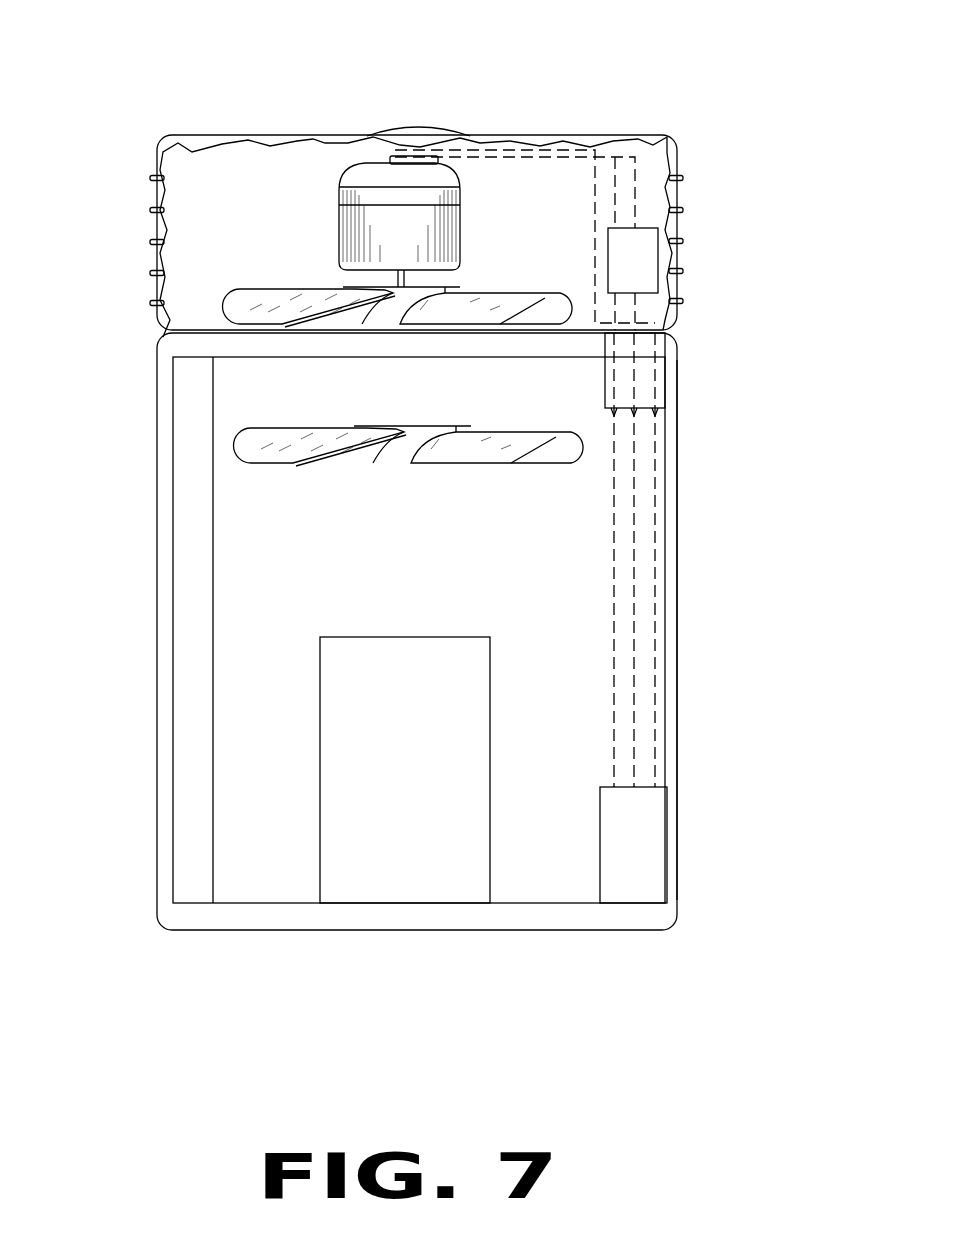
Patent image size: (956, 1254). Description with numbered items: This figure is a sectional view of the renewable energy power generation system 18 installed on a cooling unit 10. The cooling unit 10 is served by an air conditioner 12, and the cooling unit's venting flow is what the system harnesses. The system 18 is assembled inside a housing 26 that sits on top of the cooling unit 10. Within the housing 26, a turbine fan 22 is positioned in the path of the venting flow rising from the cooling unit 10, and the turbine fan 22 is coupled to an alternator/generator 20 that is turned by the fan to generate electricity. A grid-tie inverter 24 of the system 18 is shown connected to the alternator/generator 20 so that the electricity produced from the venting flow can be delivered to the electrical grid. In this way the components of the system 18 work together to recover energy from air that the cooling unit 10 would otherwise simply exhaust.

The cooling unit 10 is at (122, 641).
The air conditioner for cooling unit 12 is at (677, 583).
The renewable energy power generation system 18 is at (570, 103).
The alternator/generator 20 is at (347, 235).
The turbine fan 22 is at (228, 236).
The grid-tie inverter 24 is at (645, 270).
The housing 26 is at (155, 243).